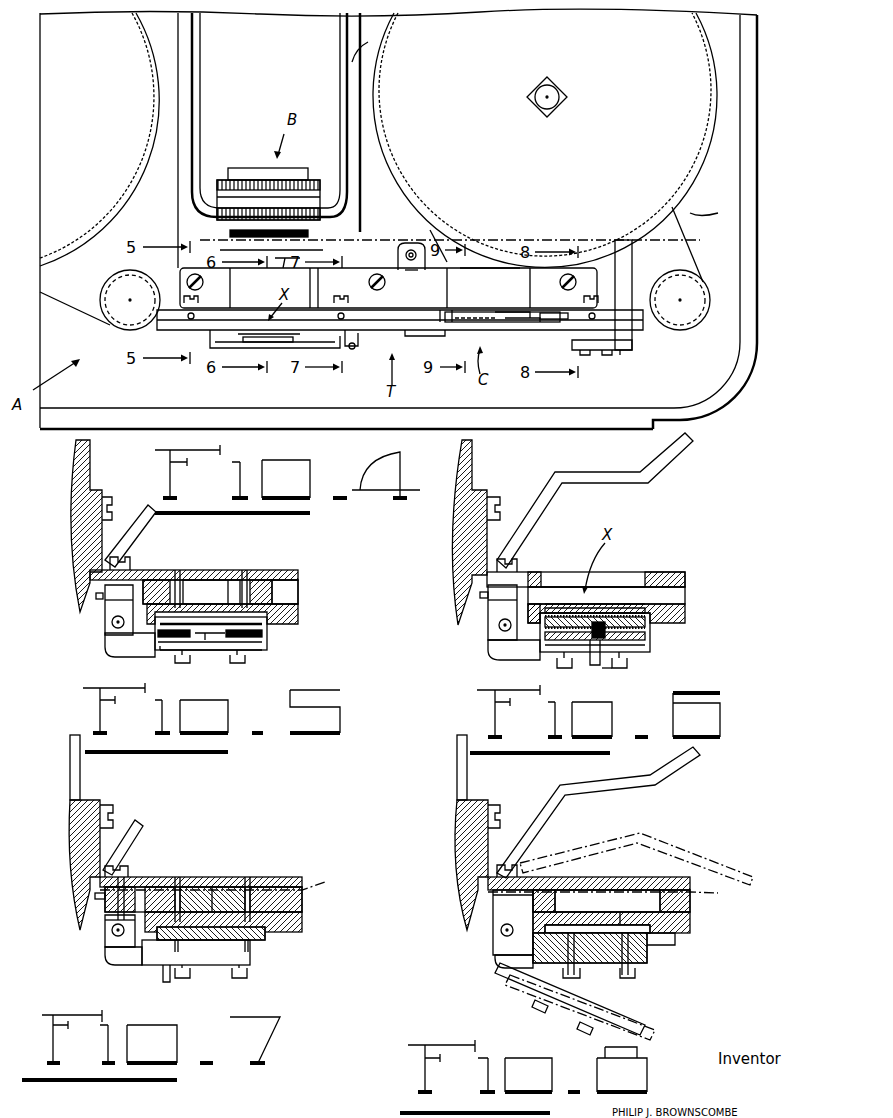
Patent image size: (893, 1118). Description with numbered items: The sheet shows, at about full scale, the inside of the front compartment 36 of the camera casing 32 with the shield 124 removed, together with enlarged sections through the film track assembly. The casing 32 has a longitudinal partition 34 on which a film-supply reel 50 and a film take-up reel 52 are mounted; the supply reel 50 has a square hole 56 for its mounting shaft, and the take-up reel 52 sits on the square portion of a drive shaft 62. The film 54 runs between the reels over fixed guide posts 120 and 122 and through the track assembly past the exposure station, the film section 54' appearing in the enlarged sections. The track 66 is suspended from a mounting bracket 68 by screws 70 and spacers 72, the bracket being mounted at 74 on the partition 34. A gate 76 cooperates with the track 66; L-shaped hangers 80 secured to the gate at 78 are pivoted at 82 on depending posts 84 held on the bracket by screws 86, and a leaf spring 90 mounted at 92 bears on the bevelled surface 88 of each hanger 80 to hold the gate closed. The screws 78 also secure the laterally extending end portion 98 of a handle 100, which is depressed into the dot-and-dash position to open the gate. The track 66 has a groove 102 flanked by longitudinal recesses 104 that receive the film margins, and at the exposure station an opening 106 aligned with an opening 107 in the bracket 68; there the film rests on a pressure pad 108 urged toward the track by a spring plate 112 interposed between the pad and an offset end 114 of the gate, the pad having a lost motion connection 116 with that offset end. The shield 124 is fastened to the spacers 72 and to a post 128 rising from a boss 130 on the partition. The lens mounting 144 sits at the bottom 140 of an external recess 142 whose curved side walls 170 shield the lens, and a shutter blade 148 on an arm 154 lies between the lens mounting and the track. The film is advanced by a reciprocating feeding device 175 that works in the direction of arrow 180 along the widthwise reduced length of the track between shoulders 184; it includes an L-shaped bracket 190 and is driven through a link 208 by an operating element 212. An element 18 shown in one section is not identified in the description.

In FIG. 8, the foot 18 is at (583, 974).
In FIG. 4, the casing 32 is at (757, 125).
In FIG. 4, the longitudinal partition 34 is at (235, 46).
In FIG. 5, the longitudinal partition 34 is at (72, 519).
In FIG. 6, the longitudinal partition 34 is at (462, 519).
In FIG. 7, the longitudinal partition 34 is at (70, 855).
In FIG. 8, the longitudinal partition 34 is at (457, 800).
In FIG. 4, the front compartment 36 is at (489, 400).
In FIG. 4, the film-supply reel 50 is at (128, 175).
In FIG. 4, the film take-up reel 52 is at (686, 189).
In FIG. 4, the film 54 is at (381, 266).
In FIG. 5, the film 54 is at (211, 648).
In FIG. 7, the film 54 is at (220, 943).
In FIG. 5, the tape section 54' is at (237, 578).
In FIG. 6, the tape section 54' is at (595, 600).
In FIG. 7, the tape section 54' is at (221, 885).
In FIG. 8, the tape section 54' is at (597, 911).
In FIG. 4, the square hole 56 is at (562, 100).
In FIG. 4, the drive shaft 62 is at (546, 105).
In FIG. 4, the track 66 is at (172, 330).
In FIG. 5, the track 66 is at (298, 613).
In FIG. 6, the track 66 is at (685, 612).
In FIG. 7, the track 66 is at (302, 922).
In FIG. 8, the track 66 is at (690, 921).
In FIG. 4, the mounting bracket 68 is at (478, 270).
In FIG. 5, the mounting bracket 68 is at (210, 570).
In FIG. 7, the mounting bracket 68 is at (207, 877).
In FIG. 8, the mounting bracket 68 is at (597, 878).
In FIG. 7, the screws 70 is at (177, 877).
In FIG. 4, the spacers 72 is at (195, 316).
In FIG. 5, the spacers 72 is at (298, 594).
In FIG. 6, the spacers 72 is at (685, 592).
In FIG. 7, the spacers 72 is at (302, 902).
In FIG. 8, the spacers 72 is at (690, 905).
In FIG. 4, the mounting 74 is at (203, 281).
In FIG. 5, the mounting 74 is at (109, 500).
In FIG. 6, the mounting 74 is at (500, 503).
In FIG. 7, the mounting 74 is at (113, 812).
In FIG. 8, the mounting 74 is at (500, 810).
In FIG. 4, the gate 76 is at (350, 348).
In FIG. 7, the gate 76 is at (162, 960).
In FIG. 8, the gate 76 is at (666, 945).
In FIG. 4, the screws 78 is at (357, 350).
In FIG. 5, the screws 78 is at (175, 660).
In FIG. 6, the screws 78 is at (557, 663).
In FIG. 7, the screws 78 is at (190, 974).
In FIG. 4, the L-shaped hangers 80 is at (574, 345).
In FIG. 5, the L-shaped hangers 80 is at (133, 651).
In FIG. 6, the L-shaped hangers 80 is at (520, 651).
In FIG. 7, the L-shaped hangers 80 is at (130, 962).
In FIG. 8, the L-shaped hangers 80 is at (505, 966).
In FIG. 5, the pivot mounting 82 is at (107, 640).
In FIG. 6, the pivot mounting 82 is at (492, 640).
In FIG. 7, the pivot mounting 82 is at (107, 948).
In FIG. 8, the pivot mounting 82 is at (495, 950).
In FIG. 5, the depending posts 84 is at (106, 618).
In FIG. 6, the depending posts 84 is at (492, 618).
In FIG. 7, the depending posts 84 is at (106, 925).
In FIG. 8, the depending posts 84 is at (490, 895).
In FIG. 4, the screws 86 is at (344, 296).
In FIG. 5, the screws 86 is at (130, 562).
In FIG. 6, the screws 86 is at (516, 560).
In FIG. 7, the screws 86 is at (127, 868).
In FIG. 8, the screws 86 is at (515, 867).
In FIG. 5, the bevelled surface 88 is at (118, 602).
In FIG. 6, the bevelled surface 88 is at (505, 604).
In FIG. 8, the bevelled surface 88 is at (500, 927).
In FIG. 5, the leaf spring 90 is at (98, 599).
In FIG. 6, the leaf spring 90 is at (482, 598).
In FIG. 7, the leaf spring 90 is at (100, 899).
In FIG. 8, the leaf spring 90 is at (573, 900).
In FIG. 7, the mounting 92 is at (320, 884).
In FIG. 8, the mounting 92 is at (716, 894).
In FIG. 4, the laterally extending end portion 98 is at (617, 352).
In FIG. 6, the laterally extending end portion 98 is at (594, 665).
In FIG. 7, the laterally extending end portion 98 is at (167, 982).
In FIG. 8, the laterally extending end portion 98 is at (522, 988).
In FIG. 4, the handle 100 is at (632, 261).
In FIG. 5, the handle 100 is at (138, 521).
In FIG. 6, the handle 100 is at (648, 480).
In FIG. 7, the handle 100 is at (140, 830).
In FIG. 8, the handle 100 is at (665, 775).
In FIG. 5, the groove 102 is at (205, 604).
In FIG. 6, the groove 102 is at (562, 608).
In FIG. 7, the groove 102 is at (238, 887).
In FIG. 8, the groove 102 is at (605, 925).
In FIG. 5, the longitudinal recesses 104 is at (158, 592).
In FIG. 6, the longitudinal recesses 104 is at (534, 606).
In FIG. 7, the longitudinal recesses 104 is at (153, 887).
In FIG. 8, the longitudinal recesses 104 is at (550, 893).
In FIG. 6, the opening 106 is at (628, 612).
In FIG. 6, the opening 107 is at (596, 580).
In FIG. 4, the pressure pad 108 is at (310, 334).
In FIG. 5, the pressure pad 108 is at (264, 628).
In FIG. 6, the pressure pad 108 is at (650, 628).
In FIG. 4, the spring plate 112 is at (275, 337).
In FIG. 5, the spring plate 112 is at (224, 655).
In FIG. 6, the spring plate 112 is at (650, 640).
In FIG. 4, the offset end 114 is at (212, 344).
In FIG. 5, the offset end 114 is at (264, 645).
In FIG. 6, the offset end 114 is at (650, 650).
In FIG. 6, the lost motion connection 116 is at (607, 668).
In FIG. 4, the fixed guide post 120 is at (121, 314).
In FIG. 4, the fixed guide post 122 is at (698, 313).
In FIG. 4, the shield 124 is at (432, 230).
In FIG. 4, the post 128 is at (404, 248).
In FIG. 4, the boss 130 is at (416, 250).
In FIG. 4, the bottom 140 is at (330, 228).
In FIG. 4, the external recess 142 is at (318, 87).
In FIG. 4, the lens mounting 144 is at (223, 174).
In FIG. 4, the shutter blade 148 is at (323, 250).
In FIG. 4, the arm 154 is at (285, 262).
In FIG. 4, the curved side walls 170 is at (204, 88).
In FIG. 4, the film-feeding device 175 is at (447, 310).
In FIG. 4, the arrow 180 is at (490, 314).
In FIG. 4, the shoulders 184 is at (505, 324).
In FIG. 4, the L-shaped bracket 190 is at (498, 310).
In FIG. 4, the link 208 is at (510, 313).
In FIG. 4, the operating element 212 is at (550, 313).